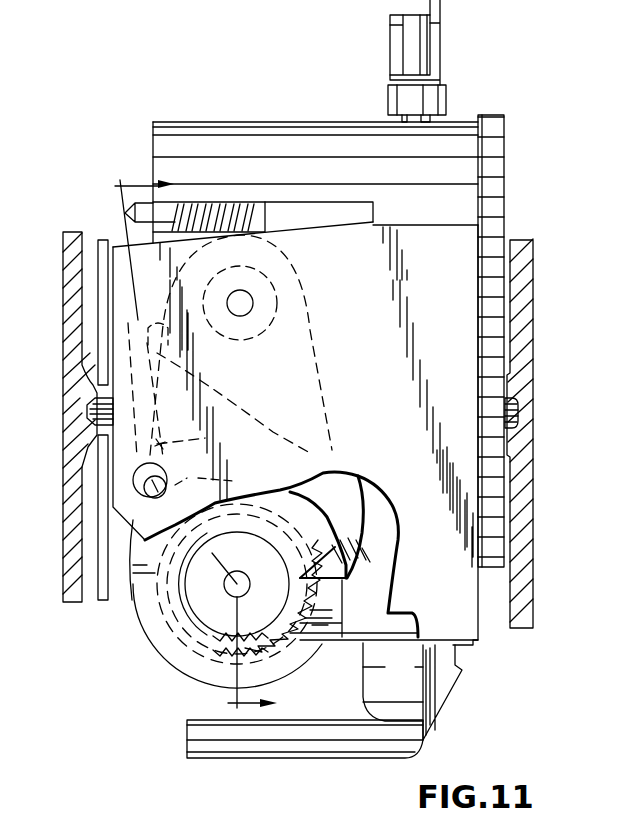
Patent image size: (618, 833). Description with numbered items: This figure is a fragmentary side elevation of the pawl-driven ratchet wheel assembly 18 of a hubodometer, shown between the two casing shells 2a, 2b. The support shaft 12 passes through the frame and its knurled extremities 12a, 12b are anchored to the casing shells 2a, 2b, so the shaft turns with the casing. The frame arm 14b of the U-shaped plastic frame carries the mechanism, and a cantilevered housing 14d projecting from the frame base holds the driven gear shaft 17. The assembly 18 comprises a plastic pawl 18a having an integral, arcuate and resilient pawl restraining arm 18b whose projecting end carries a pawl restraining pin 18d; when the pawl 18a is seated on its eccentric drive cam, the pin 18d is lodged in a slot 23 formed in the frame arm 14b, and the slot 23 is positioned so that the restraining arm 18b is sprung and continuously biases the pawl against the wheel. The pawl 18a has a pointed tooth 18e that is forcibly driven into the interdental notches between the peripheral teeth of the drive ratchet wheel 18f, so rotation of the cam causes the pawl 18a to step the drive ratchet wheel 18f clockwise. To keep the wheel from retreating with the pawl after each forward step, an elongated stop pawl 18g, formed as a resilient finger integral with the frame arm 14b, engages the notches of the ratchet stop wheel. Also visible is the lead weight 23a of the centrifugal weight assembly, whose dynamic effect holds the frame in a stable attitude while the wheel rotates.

The casing shell 2a is at (77, 450).
The casing shell 2b is at (528, 453).
The support shaft 12 is at (182, 447).
The knurled extremity 12a is at (85, 412).
The knurled extremity 12b is at (517, 412).
The frame arm 14b is at (450, 613).
The cantilevered housing 14d is at (217, 143).
The driven gear shaft 17 is at (152, 203).
The ratchet and pawl assembly 18 is at (150, 688).
The pawl 18a is at (322, 338).
The pawl restraining arm 18b is at (215, 439).
The pawl restraining pin 18d is at (143, 495).
The pointed tooth 18e is at (347, 577).
The drive ratchet wheel 18f is at (223, 653).
The stop pawl 18g is at (338, 640).
The slot 23 is at (163, 503).
The lead weight 23a is at (253, 747).